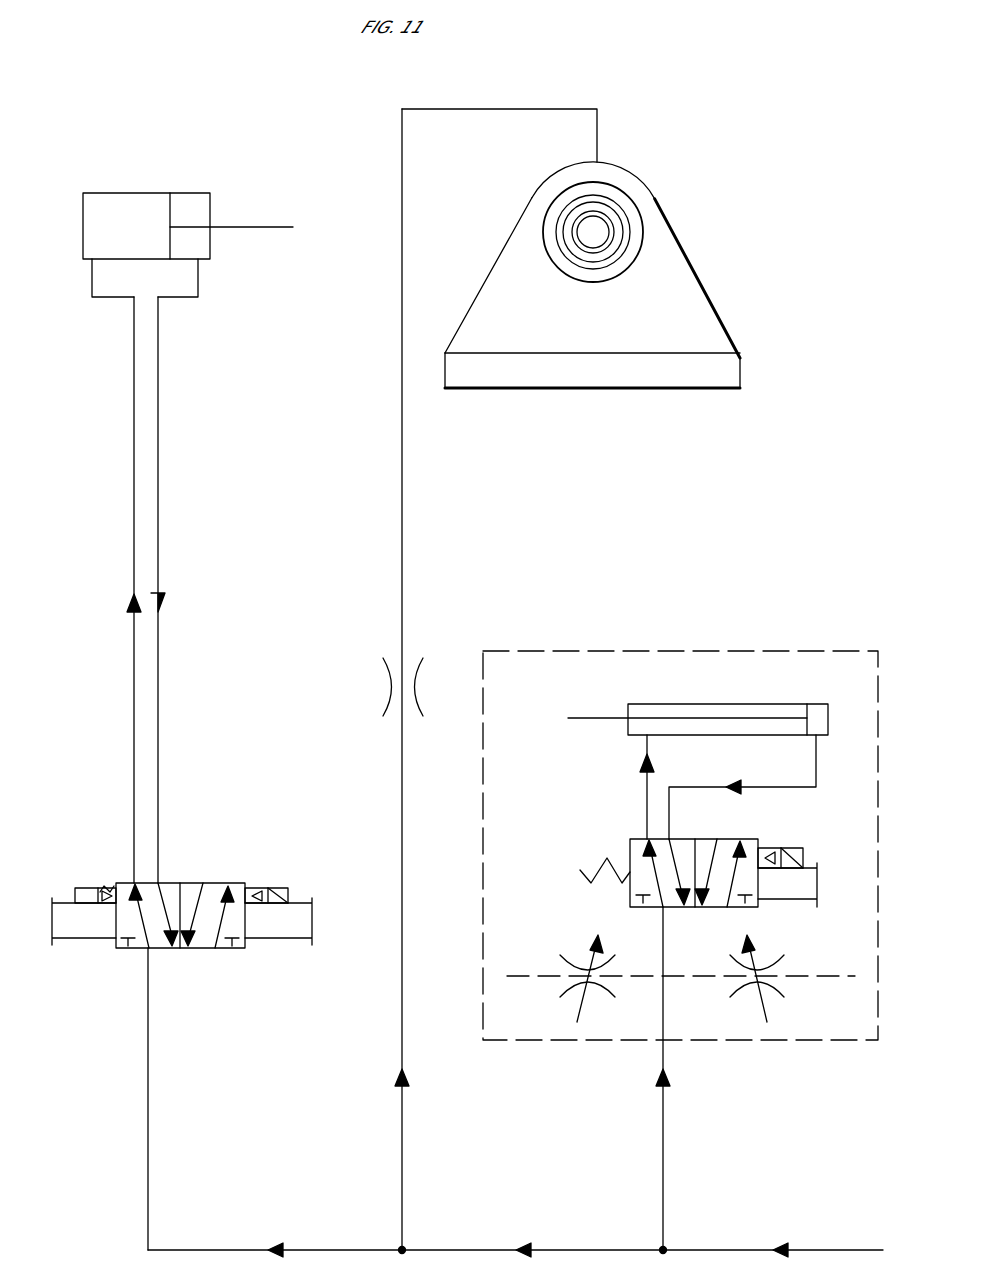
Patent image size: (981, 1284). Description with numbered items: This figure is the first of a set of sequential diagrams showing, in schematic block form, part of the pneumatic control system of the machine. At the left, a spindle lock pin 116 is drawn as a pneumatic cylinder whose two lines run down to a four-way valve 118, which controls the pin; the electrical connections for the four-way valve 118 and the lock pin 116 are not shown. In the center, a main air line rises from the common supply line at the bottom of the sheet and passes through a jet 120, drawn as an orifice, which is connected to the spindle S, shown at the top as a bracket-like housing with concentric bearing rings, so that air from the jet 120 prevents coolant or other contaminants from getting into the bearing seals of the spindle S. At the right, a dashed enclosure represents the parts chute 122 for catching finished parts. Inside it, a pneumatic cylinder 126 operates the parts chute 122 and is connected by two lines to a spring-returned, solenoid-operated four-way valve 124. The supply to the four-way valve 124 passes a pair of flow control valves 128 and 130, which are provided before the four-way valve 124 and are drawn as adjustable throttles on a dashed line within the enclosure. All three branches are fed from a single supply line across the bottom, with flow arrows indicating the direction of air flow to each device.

The spindle lock pin 116 is at (160, 200).
The spindle S is at (623, 180).
The four-way valve 118 is at (198, 875).
The jet 120 is at (386, 688).
The parts chute 122 is at (715, 640).
The four-way valve 124 is at (810, 870).
The pneumatic cylinder 126 is at (773, 707).
The flow control valve 128 is at (590, 958).
The flow control valve 130 is at (752, 958).